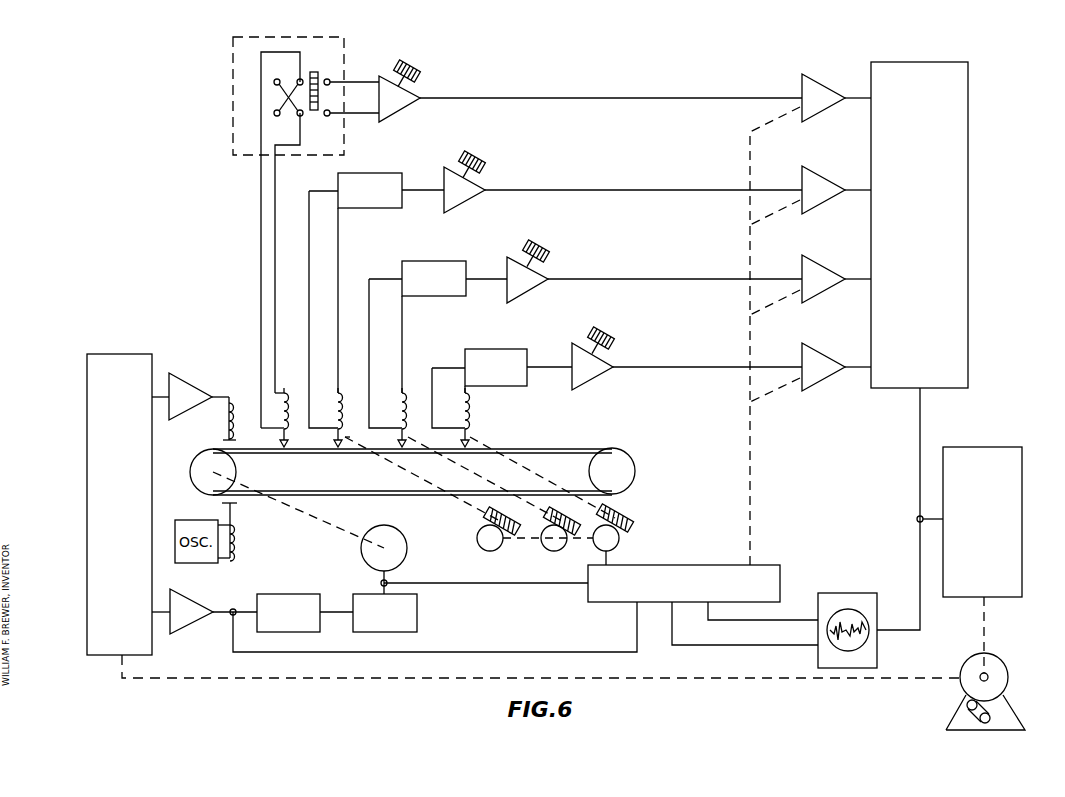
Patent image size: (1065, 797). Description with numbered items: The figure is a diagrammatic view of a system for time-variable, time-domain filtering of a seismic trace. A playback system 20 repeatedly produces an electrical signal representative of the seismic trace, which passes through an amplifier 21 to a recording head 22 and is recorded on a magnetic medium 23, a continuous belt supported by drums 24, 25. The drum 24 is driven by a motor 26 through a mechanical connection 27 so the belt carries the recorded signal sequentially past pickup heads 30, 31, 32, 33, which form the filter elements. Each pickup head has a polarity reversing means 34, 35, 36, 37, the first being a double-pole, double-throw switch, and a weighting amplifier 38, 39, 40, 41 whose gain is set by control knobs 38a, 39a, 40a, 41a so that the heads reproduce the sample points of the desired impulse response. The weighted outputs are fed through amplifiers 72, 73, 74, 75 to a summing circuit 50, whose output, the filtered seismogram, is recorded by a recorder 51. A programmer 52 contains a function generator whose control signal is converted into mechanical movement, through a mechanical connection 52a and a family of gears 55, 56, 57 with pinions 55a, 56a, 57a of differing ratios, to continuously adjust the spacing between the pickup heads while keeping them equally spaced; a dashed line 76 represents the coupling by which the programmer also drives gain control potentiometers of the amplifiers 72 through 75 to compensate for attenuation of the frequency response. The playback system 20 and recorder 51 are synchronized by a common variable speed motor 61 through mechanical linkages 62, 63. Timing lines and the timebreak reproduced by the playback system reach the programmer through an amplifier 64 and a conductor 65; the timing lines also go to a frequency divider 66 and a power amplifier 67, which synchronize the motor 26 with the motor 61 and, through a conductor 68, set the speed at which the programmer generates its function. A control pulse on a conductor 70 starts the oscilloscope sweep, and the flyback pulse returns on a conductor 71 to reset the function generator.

The playback system 20 is at (103, 352).
The amplifier 21 is at (180, 375).
The recording head 22 is at (222, 433).
The magnetic medium 23 is at (518, 446).
The drum 24 is at (200, 449).
The drum 25 is at (628, 444).
The motor 26 is at (402, 533).
The mechanical connection 27 is at (332, 524).
The pickup head 30 is at (290, 392).
The pickup head 31 is at (344, 392).
The pickup head 32 is at (408, 392).
The pickup head 33 is at (471, 407).
The polarity reversing means 34 is at (243, 35).
The polarity reversing means 35 is at (352, 171).
The polarity reversing means 36 is at (410, 259).
The polarity reversing means 37 is at (470, 347).
The amplifier 38 is at (393, 117).
The control knob 38a is at (410, 62).
The amplifier 39 is at (458, 208).
The control knob 39a is at (478, 152).
The amplifier 40 is at (520, 298).
The control knob 40a is at (540, 242).
The amplifier 41 is at (583, 387).
The control knob 41a is at (605, 328).
The summing circuit 50 is at (963, 60).
The recorder 51 is at (1018, 445).
The programmer 52 is at (680, 563).
The mechanical connection 52a is at (612, 557).
The gear 55 is at (478, 554).
The pinion 55a is at (486, 520).
The gear 56 is at (544, 553).
The pinion 56a is at (548, 512).
The gear 57 is at (596, 553).
The pinion 57a is at (612, 505).
The variable speed motor 61 is at (1010, 670).
The mechanical linkage 62 is at (708, 683).
The mechanical linkage 63 is at (988, 622).
The amplifier 64 is at (192, 594).
The conductor 65 is at (484, 650).
The frequency divider 66 is at (272, 592).
The power amplifier 67 is at (420, 612).
The conductor 68 is at (478, 586).
The conductor 70 is at (712, 648).
The conductor 71 is at (718, 624).
The amplifier 72 is at (815, 117).
The amplifier 73 is at (815, 209).
The amplifier 74 is at (815, 298).
The amplifier 75 is at (815, 386).
The dashed line 76 is at (752, 455).